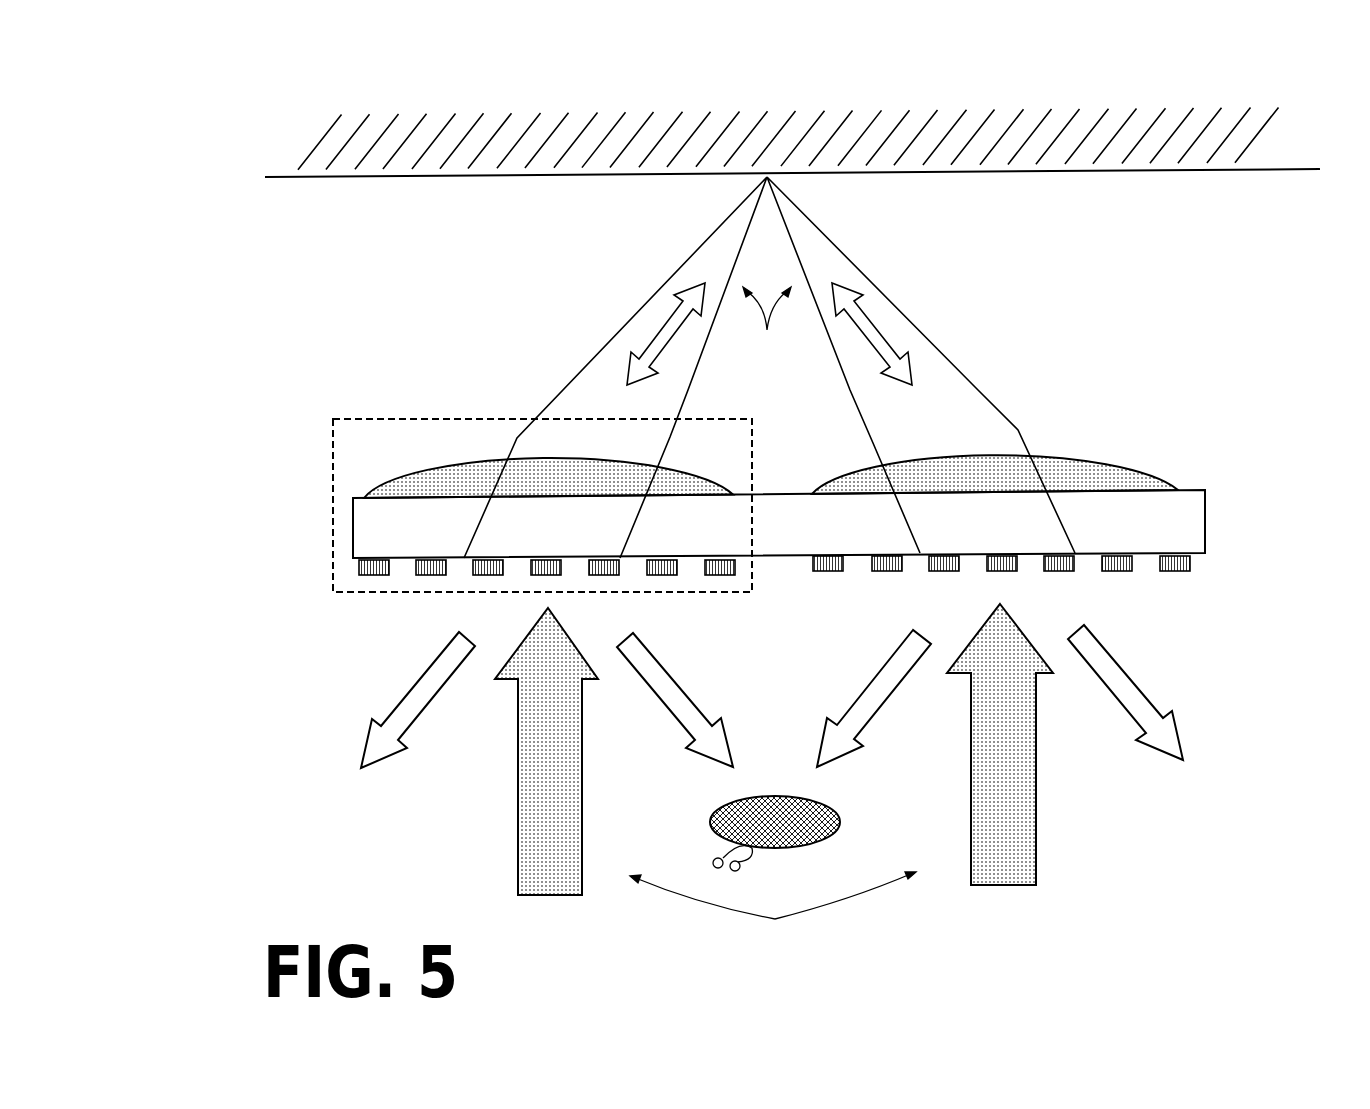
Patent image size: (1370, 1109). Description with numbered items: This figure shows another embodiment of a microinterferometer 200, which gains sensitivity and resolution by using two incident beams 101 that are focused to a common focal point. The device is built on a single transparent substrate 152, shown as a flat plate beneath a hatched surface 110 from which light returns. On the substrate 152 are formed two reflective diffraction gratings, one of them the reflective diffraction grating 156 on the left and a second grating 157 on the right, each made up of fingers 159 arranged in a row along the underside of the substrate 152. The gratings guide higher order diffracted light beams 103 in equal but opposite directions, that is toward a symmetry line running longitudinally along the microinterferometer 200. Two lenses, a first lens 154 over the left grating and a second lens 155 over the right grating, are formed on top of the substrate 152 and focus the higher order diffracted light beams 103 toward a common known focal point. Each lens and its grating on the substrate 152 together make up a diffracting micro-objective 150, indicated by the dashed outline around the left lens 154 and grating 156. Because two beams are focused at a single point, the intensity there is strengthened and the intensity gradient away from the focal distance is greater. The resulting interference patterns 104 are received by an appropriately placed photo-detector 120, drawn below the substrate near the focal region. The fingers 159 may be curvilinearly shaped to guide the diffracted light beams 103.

The ceiling / reflective surface 110 is at (308, 138).
The higher order diffracted light beams 103 is at (767, 325).
The diffracting micro-objective 150 is at (303, 459).
The transparent substrate 152 is at (1198, 546).
The lens 154 is at (413, 455).
The lens 155 is at (1158, 460).
The fingers 159 is at (357, 566).
The reflective diffraction grating 156 is at (607, 590).
The second emitter array 157 is at (1133, 596).
The interference patterns 104 is at (826, 688).
The photo-detector 120 is at (710, 818).
The incident beams 101 is at (773, 911).
The microinterferometer 200 is at (1240, 642).